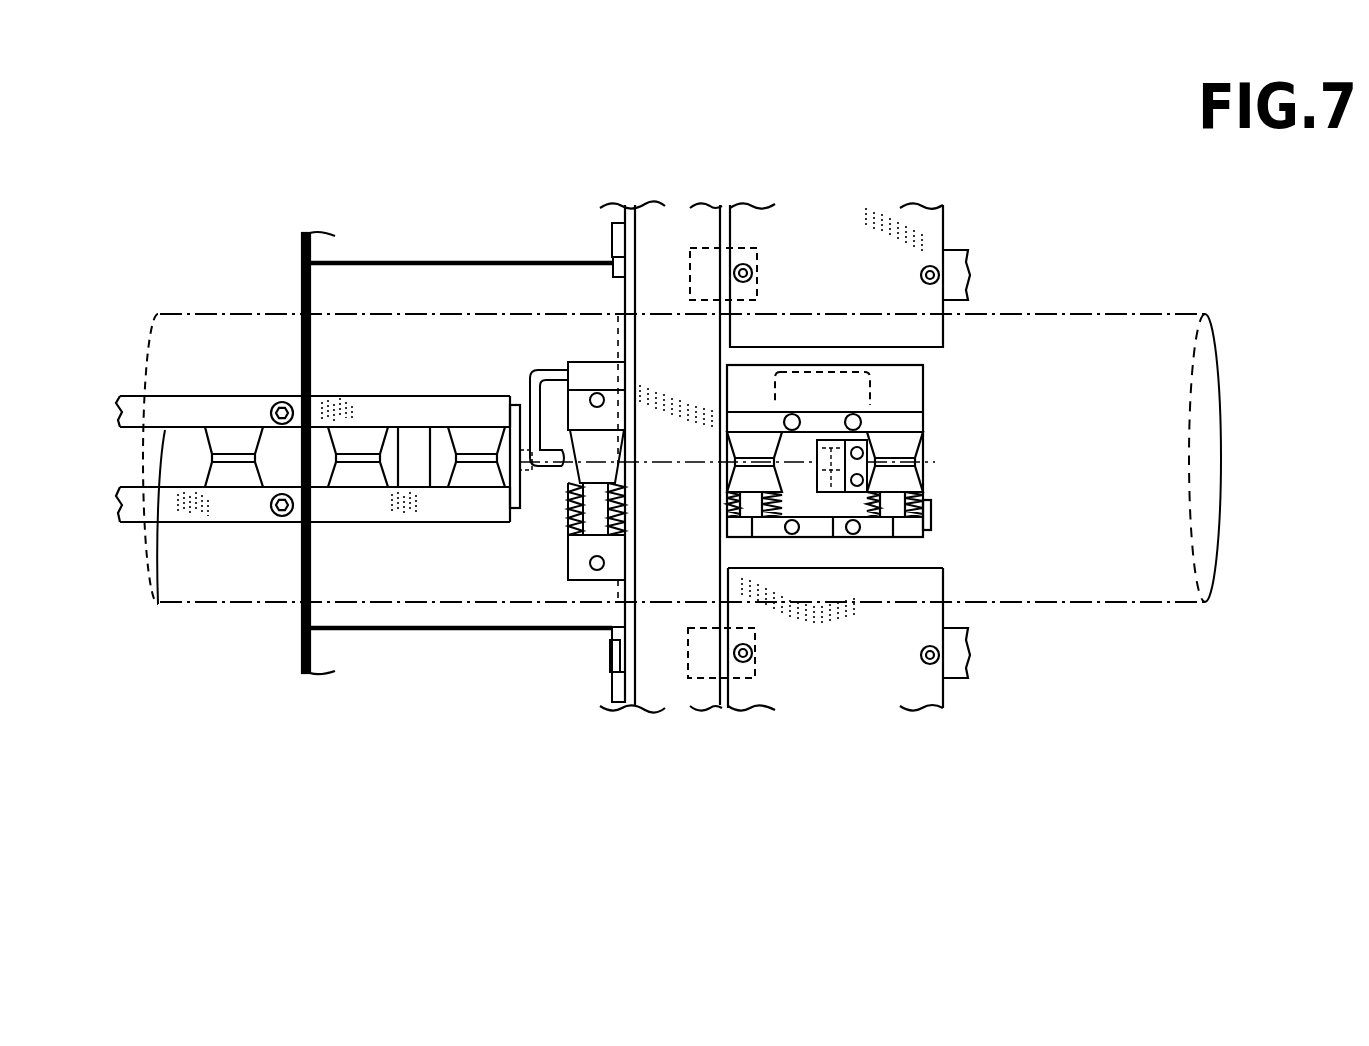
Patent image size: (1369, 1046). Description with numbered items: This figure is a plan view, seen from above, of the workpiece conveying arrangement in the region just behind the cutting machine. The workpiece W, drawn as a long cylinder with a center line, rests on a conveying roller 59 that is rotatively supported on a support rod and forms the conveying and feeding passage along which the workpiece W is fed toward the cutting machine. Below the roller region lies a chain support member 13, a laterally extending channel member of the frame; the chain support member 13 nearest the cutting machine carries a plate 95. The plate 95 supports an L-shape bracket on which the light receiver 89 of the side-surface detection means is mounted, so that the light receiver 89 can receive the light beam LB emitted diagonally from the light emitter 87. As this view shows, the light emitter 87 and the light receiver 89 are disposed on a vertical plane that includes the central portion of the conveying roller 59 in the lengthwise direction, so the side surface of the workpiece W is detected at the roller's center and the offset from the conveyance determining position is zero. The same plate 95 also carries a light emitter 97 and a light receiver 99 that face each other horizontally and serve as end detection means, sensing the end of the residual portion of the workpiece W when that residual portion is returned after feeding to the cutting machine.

The chain support member 13 is at (670, 655).
The conveying roller 59 is at (752, 445).
The light emitter 87 is at (835, 537).
The light receiver 89 is at (548, 470).
The plate 95 is at (622, 683).
The light emitter 97 is at (612, 648).
The light receiver 99 is at (612, 240).
The workpiece W is at (1035, 316).
The light beam LB is at (618, 332).